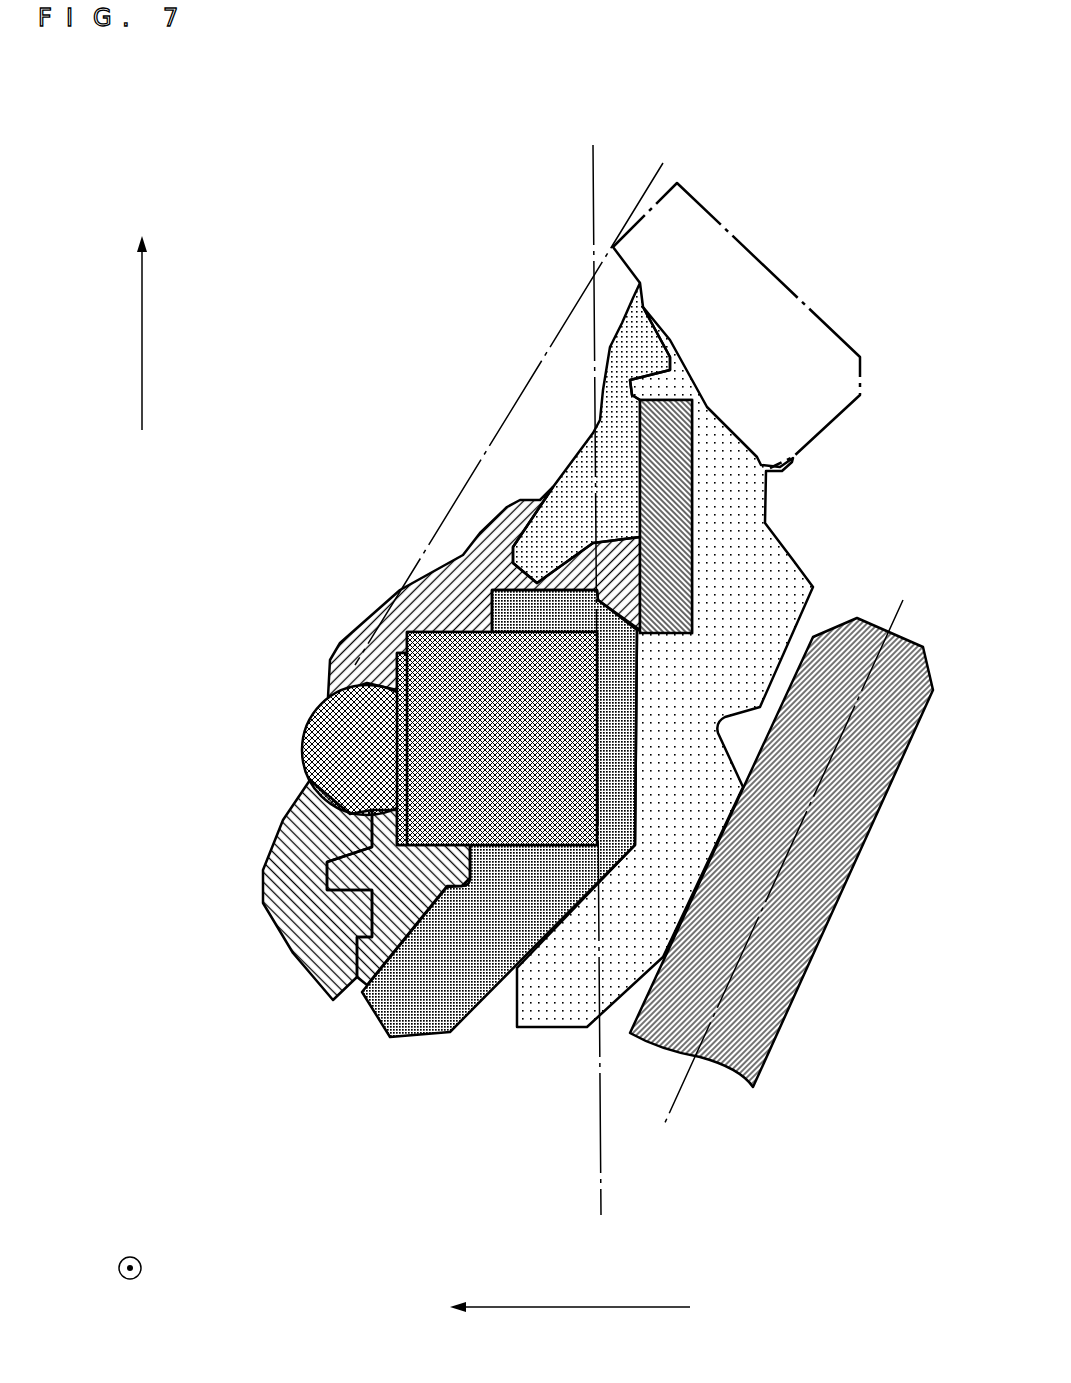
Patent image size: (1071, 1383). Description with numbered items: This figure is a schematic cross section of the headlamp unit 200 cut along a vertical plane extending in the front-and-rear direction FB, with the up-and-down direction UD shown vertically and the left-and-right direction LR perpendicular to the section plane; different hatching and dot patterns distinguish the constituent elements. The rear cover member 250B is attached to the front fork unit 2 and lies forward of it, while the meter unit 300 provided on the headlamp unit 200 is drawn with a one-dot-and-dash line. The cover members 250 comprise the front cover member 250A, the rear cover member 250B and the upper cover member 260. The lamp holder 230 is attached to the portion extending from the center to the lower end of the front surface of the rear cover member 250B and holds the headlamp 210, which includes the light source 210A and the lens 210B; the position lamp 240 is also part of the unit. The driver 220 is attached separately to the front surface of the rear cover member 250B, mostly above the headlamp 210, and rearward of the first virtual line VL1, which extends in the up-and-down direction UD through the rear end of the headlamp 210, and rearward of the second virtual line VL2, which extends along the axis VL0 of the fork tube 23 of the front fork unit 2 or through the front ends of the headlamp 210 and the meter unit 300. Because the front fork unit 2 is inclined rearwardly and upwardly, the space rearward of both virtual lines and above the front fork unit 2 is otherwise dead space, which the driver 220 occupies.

The front fork unit 2 is at (781, 852).
The fork tube 23 is at (803, 930).
The headlamp unit 200 is at (363, 407).
The headlamp 210 is at (151, 795).
The light source 210A is at (372, 846).
The lens 210B is at (317, 781).
The driver 220 is at (683, 530).
The lamp holder 230 is at (432, 1035).
The position lamp 240 is at (425, 807).
The holder 250 is at (248, 470).
The front cover member 250A is at (463, 555).
The rear cover member 250B is at (660, 775).
The upper cover member 260 is at (567, 517).
The meter unit 300 is at (735, 250).
The axis of the front fork unit VL0 is at (700, 1118).
The first virtual line VL1 is at (598, 1150).
The second virtual line VL2 is at (560, 330).
The up-and-down direction UD is at (143, 330).
The left-right direction LR is at (143, 1278).
The front-and-rear direction FB is at (598, 1310).